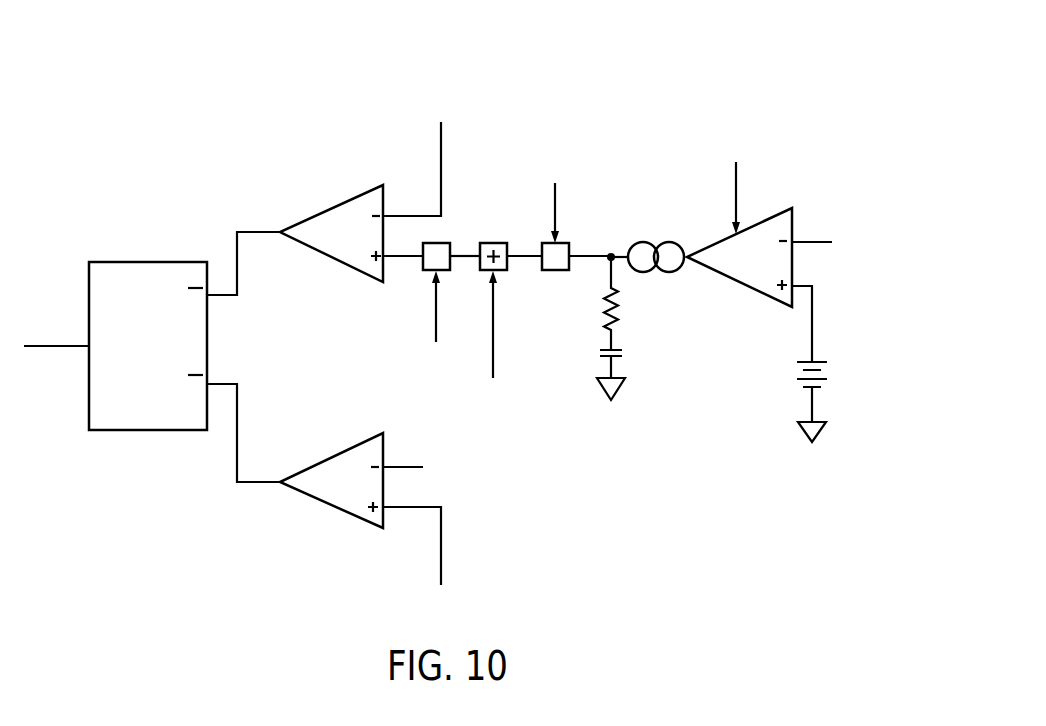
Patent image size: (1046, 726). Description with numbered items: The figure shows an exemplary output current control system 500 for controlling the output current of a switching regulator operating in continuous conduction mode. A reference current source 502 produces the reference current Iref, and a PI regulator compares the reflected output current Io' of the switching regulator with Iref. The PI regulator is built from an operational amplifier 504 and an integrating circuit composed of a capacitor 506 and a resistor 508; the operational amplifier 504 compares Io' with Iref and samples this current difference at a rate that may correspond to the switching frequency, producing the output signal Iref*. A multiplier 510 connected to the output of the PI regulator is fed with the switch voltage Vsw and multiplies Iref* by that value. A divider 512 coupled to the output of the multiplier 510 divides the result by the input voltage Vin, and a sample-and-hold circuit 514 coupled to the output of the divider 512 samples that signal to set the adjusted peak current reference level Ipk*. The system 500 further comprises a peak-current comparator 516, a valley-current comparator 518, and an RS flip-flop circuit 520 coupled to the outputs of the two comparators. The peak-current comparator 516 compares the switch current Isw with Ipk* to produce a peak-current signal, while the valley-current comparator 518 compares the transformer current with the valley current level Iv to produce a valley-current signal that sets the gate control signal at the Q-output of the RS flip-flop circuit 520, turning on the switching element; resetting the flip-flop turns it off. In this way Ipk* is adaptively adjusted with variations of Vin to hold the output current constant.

The output current control system 500 is at (654, 113).
The reference current source 502 is at (849, 376).
The operational amplifier 504 is at (738, 282).
The capacitor 506 is at (641, 347).
The resistor 508 is at (638, 305).
The multiplier 510 is at (555, 272).
The divider 512 is at (498, 240).
The sample-and-hold circuit 514 is at (443, 242).
The peak-current comparator 516 is at (315, 252).
The valley-current comparator 518 is at (325, 505).
The RS flip-flop circuit 520 is at (148, 430).